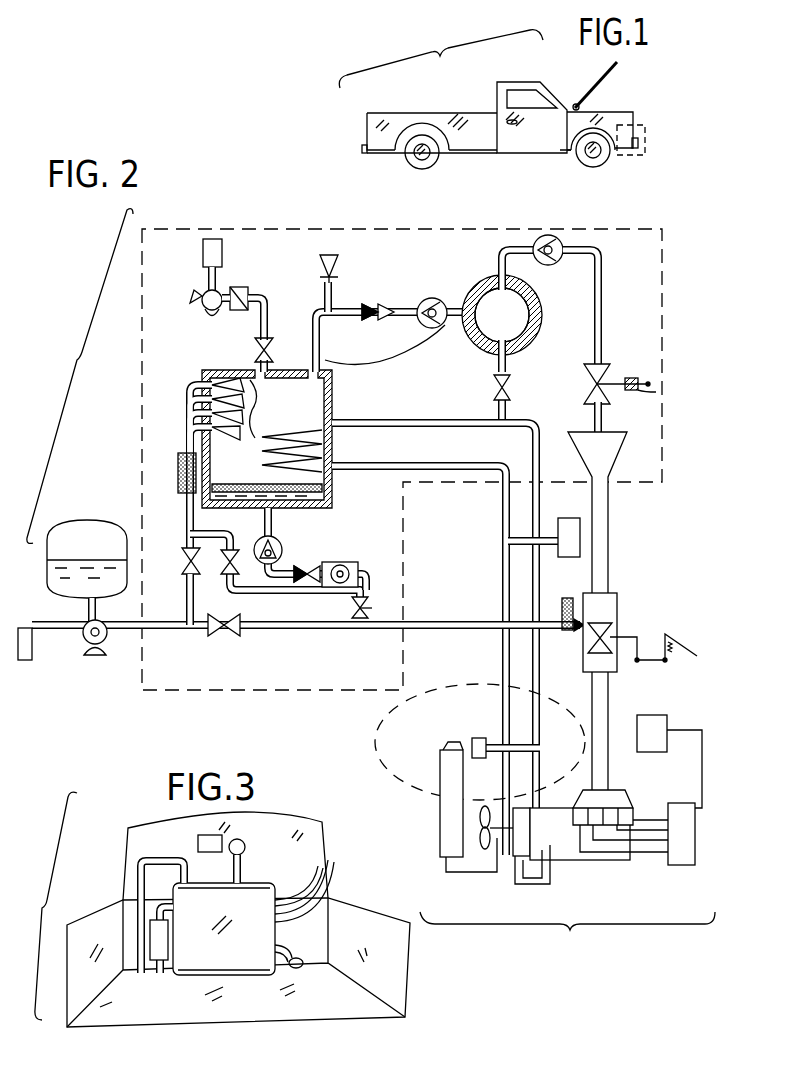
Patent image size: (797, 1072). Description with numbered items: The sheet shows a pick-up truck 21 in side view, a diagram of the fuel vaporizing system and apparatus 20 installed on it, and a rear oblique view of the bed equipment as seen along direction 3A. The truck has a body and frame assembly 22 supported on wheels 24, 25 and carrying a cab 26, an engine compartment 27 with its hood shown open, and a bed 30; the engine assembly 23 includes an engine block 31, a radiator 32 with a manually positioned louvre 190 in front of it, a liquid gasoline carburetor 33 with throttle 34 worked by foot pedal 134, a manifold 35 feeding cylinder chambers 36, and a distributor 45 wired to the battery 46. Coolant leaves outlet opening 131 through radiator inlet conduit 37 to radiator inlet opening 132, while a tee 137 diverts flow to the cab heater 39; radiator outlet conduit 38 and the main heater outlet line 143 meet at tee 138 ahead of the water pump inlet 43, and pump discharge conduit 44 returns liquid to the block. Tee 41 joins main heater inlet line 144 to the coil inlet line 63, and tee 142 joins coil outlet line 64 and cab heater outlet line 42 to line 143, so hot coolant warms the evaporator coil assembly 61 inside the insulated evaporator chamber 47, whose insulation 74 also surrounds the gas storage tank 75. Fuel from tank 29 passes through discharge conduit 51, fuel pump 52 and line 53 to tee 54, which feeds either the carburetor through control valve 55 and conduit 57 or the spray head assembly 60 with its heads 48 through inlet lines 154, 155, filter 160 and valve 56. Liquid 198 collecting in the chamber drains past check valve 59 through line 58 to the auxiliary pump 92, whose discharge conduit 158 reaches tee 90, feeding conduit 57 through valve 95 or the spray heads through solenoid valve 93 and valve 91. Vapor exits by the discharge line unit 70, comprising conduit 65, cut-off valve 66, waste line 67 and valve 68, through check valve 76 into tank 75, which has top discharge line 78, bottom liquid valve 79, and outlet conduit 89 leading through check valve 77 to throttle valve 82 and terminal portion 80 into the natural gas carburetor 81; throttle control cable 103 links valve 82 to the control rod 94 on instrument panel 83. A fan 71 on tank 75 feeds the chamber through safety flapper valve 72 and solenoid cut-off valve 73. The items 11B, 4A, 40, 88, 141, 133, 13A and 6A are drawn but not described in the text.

In FIG. 1, the truck 21 is at (441, 56).
In FIG. 3, the truck 21 is at (44, 906).
In FIG. 1, the carrier compartment or bed 30 is at (418, 112).
In FIG. 3, the carrier compartment or bed 30 is at (268, 1006).
In FIG. 1, the cab 26 is at (521, 82).
In FIG. 3, the cab 26 is at (128, 843).
In FIG. 1, the engine compartment 27 is at (636, 119).
In FIG. 1, the body and frame assembly 22 is at (520, 150).
In FIG. 1, the wheel 24 is at (410, 158).
In FIG. 1, the wheel 25 is at (606, 160).
In FIG. 1, the front bumper area 11B is at (646, 152).
In FIG. 1, the viewing direction arrow 4A is at (612, 99).
In FIG. 1, the direction of view 3A is at (366, 130).
In FIG. 2, the system and apparatus 20 is at (344, 449).
In FIG. 2, the heating subsystem 40 is at (449, 227).
In FIG. 2, the evaporator chamber 47 is at (333, 412).
In FIG. 3, the evaporator chamber 47 is at (258, 900).
In FIG. 2, the spray producing head 48 is at (215, 382).
In FIG. 2, the spray head assembly 60 is at (248, 409).
In FIG. 2, the evaporator coil assembly 61 is at (260, 467).
In FIG. 2, the liquid 198 is at (325, 491).
In FIG. 2, the detergent reservoir 88 is at (203, 253).
In FIG. 2, the fan 71 is at (200, 296).
In FIG. 3, the fan 71 is at (245, 848).
In FIG. 2, the safety flapper valve 72 is at (246, 281).
In FIG. 2, the solenoid controlled cut-off valve 73 is at (270, 350).
In FIG. 2, the evaporator discharge conduit 65 is at (321, 345).
In FIG. 3, the evaporator discharge conduit 65 is at (170, 858).
In FIG. 2, the evaporator waste line 67 is at (332, 300).
In FIG. 2, the evaporator conduit line valve 68 is at (320, 265).
In FIG. 2, the evaporator discharge cut-off valve 66 is at (374, 306).
In FIG. 2, the evaporator discharge conduit line unit 70 is at (385, 352).
In FIG. 2, the check valve 76 is at (430, 298).
In FIG. 2, the insulation 74 is at (482, 286).
In FIG. 2, the gas storage tank 75 is at (543, 328).
In FIG. 2, the storage discharge line 78 is at (505, 248).
In FIG. 2, the check valve 77 is at (548, 266).
In FIG. 2, the storage tank outlet conduit 89 is at (602, 295).
In FIG. 2, the liquid discharge control valve 79 is at (494, 388).
In FIG. 2, the throttle valve 82 is at (606, 376).
In FIG. 2, the throttle control cable 103 is at (606, 386).
In FIG. 2, the throttle control rod 94 is at (650, 380).
In FIG. 2, the instrument panel 83 is at (659, 395).
In FIG. 2, the terminal portion of storage tank outlet conduit 80 is at (588, 412).
In FIG. 2, the natural gas carburetor 81 is at (612, 444).
In FIG. 2, the coil inlet conduit line 63 is at (411, 418).
In FIG. 3, the coil inlet conduit line 63 is at (300, 892).
In FIG. 2, the coil outlet conduit line 64 is at (418, 462).
In FIG. 3, the coil outlet conduit line 64 is at (320, 866).
In FIG. 2, the main heater outlet line 143 is at (502, 659).
In FIG. 2, the main heater inlet line 144 is at (540, 675).
In FIG. 2, the tee 142 is at (505, 545).
In FIG. 2, the cab heater outlet line 42 is at (512, 552).
In FIG. 2, the tee 41 is at (556, 522).
In FIG. 2, the pipe 141 is at (548, 540).
In FIG. 2, the cab heater 39 is at (574, 557).
In FIG. 2, the discharge line 53 is at (142, 632).
In FIG. 2, the carburetor feed conduit 57 is at (440, 618).
In FIG. 2, the carburetor feed conduit control valve 55 is at (224, 636).
In FIG. 2, the tee 54 is at (192, 632).
In FIG. 2, the filter 133 is at (564, 632).
In FIG. 2, the liquid gasoline carburetor 33 is at (620, 603).
In FIG. 2, the throttle 34 is at (605, 652).
In FIG. 2, the foot pedal 134 is at (673, 630).
In FIG. 2, the fuel tank 29 is at (86, 514).
In FIG. 2, the liquid fuel discharge conduit line 51 is at (86, 620).
In FIG. 2, the fuel pump 52 is at (84, 642).
In FIG. 2, the electric battery 46 is at (25, 628).
In FIG. 2, the evaporator inlet line 155 is at (188, 508).
In FIG. 3, the evaporator inlet line 155 is at (160, 976).
In FIG. 2, the filter 160 is at (178, 466).
In FIG. 3, the filter 160 is at (168, 943).
In FIG. 2, the valve 56 is at (182, 564).
In FIG. 2, the evaporator inlet line 154 is at (188, 598).
In FIG. 2, the solenoid controlled valve 93 is at (224, 576).
In FIG. 2, the discharge conduit 158 is at (283, 595).
In FIG. 2, the tee 90 is at (366, 598).
In FIG. 2, the control valve 95 is at (381, 607).
In FIG. 2, the liquid conduit line 58 is at (276, 524).
In FIG. 3, the liquid conduit line 58 is at (292, 955).
In FIG. 2, the evaporator liquid discharge check valve 59 is at (282, 548).
In FIG. 2, the control valve 91 is at (306, 568).
In FIG. 3, the control valve 91 is at (300, 968).
In FIG. 2, the auxiliary fuel pump 92 is at (336, 565).
In FIG. 2, the engine region 13A is at (378, 748).
In FIG. 2, the radiator inlet conduit 37 is at (492, 745).
In FIG. 2, the tee 137 is at (543, 750).
In FIG. 2, the coolant liquid inlet opening 132 is at (472, 744).
In FIG. 2, the radiator 32 is at (440, 750).
In FIG. 2, the radiator outlet conduit 38 is at (448, 866).
In FIG. 2, the water pump inlet 43 is at (484, 838).
In FIG. 2, the engine block 31 is at (598, 860).
In FIG. 2, the coolant liquid outlet opening 131 is at (552, 835).
In FIG. 2, the tee 138 is at (515, 882).
In FIG. 2, the pump discharge conduit 44 is at (546, 882).
In FIG. 2, the manifold 35 is at (622, 800).
In FIG. 2, the cylinder chambers 36 is at (640, 812).
In FIG. 2, the distributor 45 is at (682, 866).
In FIG. 2, the blocking partition or louvre 190 is at (422, 836).
In FIG. 2, the engine assembly 23 is at (567, 934).
In FIG. 3, the viewing direction arrow 6A is at (106, 880).